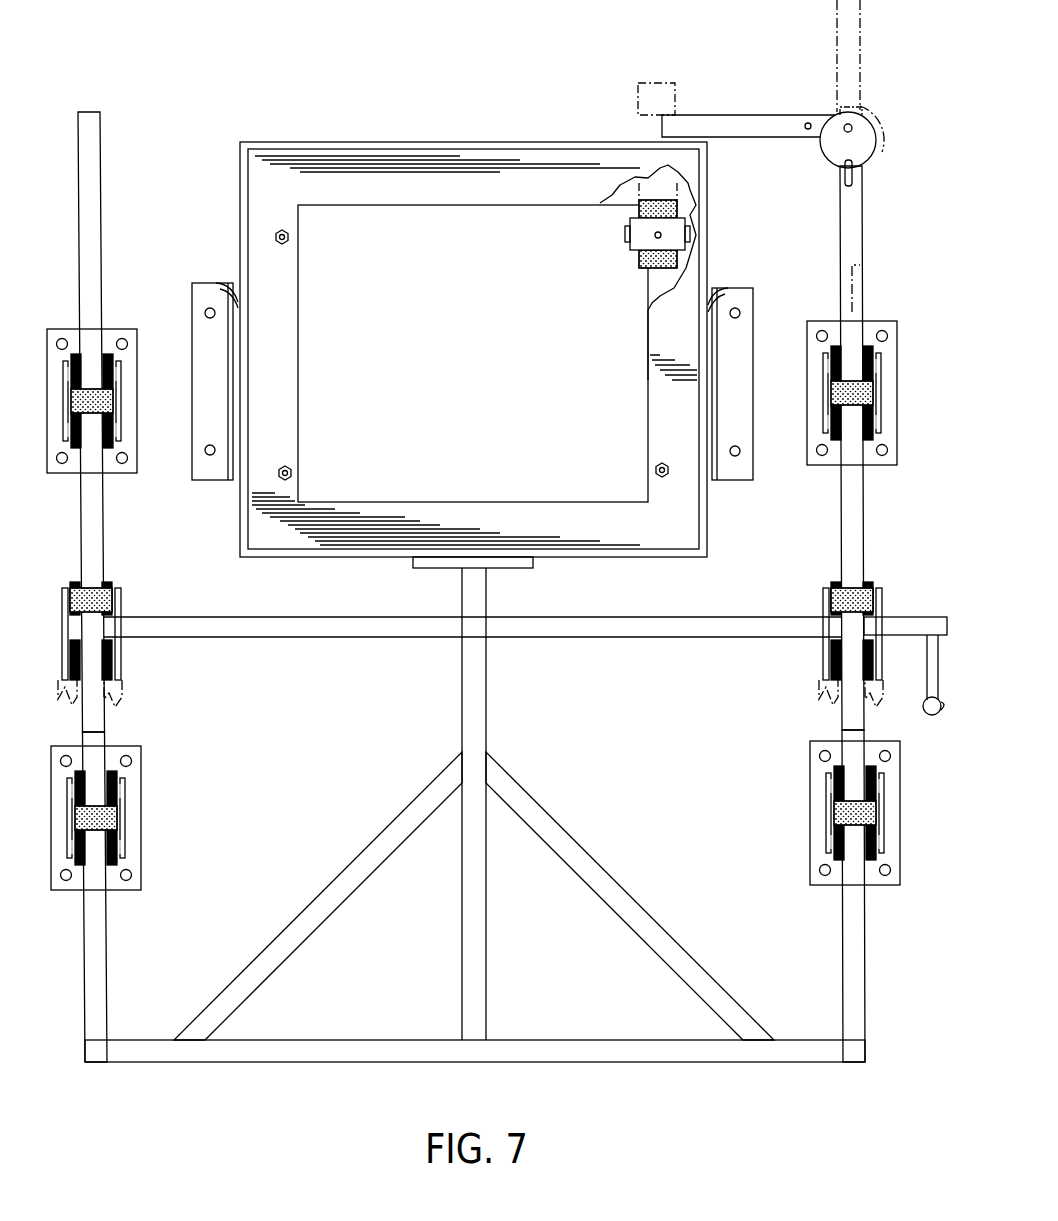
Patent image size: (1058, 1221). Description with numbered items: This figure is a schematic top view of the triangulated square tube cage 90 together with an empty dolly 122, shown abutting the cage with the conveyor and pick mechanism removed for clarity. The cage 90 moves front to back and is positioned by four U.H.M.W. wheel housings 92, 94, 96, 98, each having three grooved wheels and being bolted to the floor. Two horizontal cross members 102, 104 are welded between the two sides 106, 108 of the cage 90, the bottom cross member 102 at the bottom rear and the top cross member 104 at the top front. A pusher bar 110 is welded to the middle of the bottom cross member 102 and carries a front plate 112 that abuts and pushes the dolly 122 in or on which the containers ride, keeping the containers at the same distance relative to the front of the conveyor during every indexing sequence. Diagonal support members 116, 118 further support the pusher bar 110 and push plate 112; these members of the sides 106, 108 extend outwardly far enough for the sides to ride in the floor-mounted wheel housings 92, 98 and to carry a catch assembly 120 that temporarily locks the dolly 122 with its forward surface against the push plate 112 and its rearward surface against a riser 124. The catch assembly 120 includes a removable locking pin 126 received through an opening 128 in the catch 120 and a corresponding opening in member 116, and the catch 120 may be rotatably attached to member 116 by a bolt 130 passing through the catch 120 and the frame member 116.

The square tube cage 90 is at (498, 610).
The wheel housing 92 is at (878, 378).
The wheel housing 94 is at (884, 832).
The wheel housing 96 is at (124, 812).
The wheel housing 98 is at (122, 342).
The bottom cross member 102 is at (750, 1062).
The top cross member 104 is at (675, 617).
The side 106 is at (865, 1005).
The side 108 is at (107, 972).
The pusher bar 110 is at (486, 1000).
The front plate 112 is at (515, 568).
The diagonal support member 116 is at (862, 510).
The diagonal support member 118 is at (100, 170).
The catch assembly 120 is at (797, 156).
The dolly 122 is at (472, 321).
The riser 124 is at (675, 125).
The locking pin 126 is at (856, 178).
The opening 128 is at (880, 118).
The bolt 130 is at (852, 126).